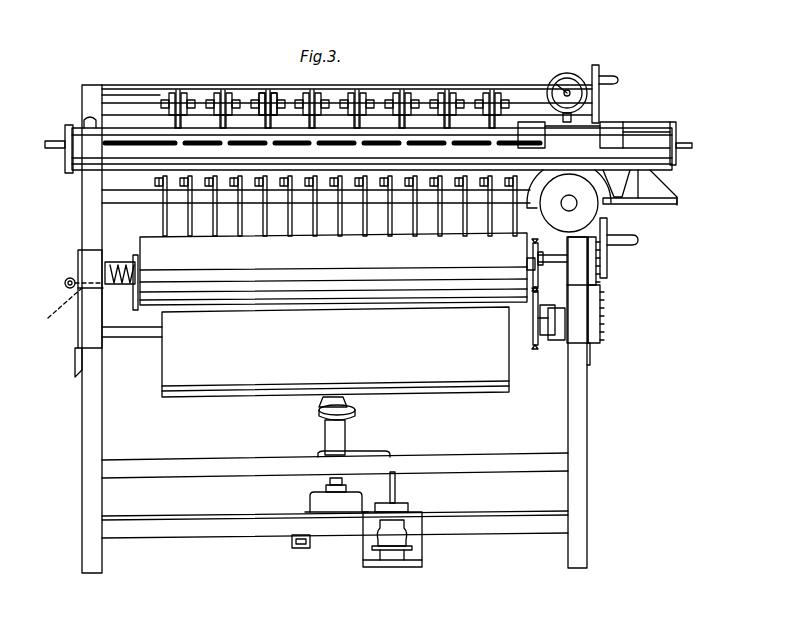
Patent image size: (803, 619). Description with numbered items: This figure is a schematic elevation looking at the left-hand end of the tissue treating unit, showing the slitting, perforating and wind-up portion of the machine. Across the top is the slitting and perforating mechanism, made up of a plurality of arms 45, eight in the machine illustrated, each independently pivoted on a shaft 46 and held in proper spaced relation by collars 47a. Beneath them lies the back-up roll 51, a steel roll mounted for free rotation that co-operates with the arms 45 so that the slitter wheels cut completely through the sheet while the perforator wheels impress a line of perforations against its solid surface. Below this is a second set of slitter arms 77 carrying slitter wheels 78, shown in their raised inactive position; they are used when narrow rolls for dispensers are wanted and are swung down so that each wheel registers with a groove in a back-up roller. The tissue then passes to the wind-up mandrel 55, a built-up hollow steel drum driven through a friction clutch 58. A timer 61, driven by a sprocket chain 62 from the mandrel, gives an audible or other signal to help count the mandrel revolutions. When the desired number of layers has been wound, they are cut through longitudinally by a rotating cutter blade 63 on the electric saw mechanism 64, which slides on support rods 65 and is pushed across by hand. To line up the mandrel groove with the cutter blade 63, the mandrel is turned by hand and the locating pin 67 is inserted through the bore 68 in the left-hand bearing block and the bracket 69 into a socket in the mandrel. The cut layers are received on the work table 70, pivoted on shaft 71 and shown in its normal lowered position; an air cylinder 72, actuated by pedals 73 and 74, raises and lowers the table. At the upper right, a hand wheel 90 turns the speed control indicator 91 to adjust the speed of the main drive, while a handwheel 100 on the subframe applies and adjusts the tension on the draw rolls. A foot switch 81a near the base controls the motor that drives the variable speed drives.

The shaft 46 is at (130, 105).
The arms 45 is at (215, 92).
The collars 47a is at (273, 92).
The back-up roll 51 is at (465, 122).
The speed control indicator 91 is at (556, 80).
The hand wheel 90 is at (618, 78).
The support rods 65 is at (650, 127).
The electric saw mechanism 64 is at (680, 191).
The rotating cutter blade 63 is at (597, 210).
The handwheel 100 is at (612, 268).
The slitter wheels 78 is at (155, 181).
The slitter arms 77 is at (163, 215).
The wind-up mandrel 55 is at (337, 269).
The work table 70 is at (335, 352).
The locating pin 67 is at (62, 287).
The bore 68 is at (50, 309).
The bracket 69 is at (116, 290).
The friction clutch 58 is at (135, 290).
The shaft 71 is at (136, 340).
The air cylinder 72 is at (325, 430).
The sprocket chain 62 is at (540, 292).
The timer 61 is at (560, 342).
The foot switch 81a is at (310, 550).
The pedal 74 is at (385, 556).
The pedal 73 is at (397, 555).